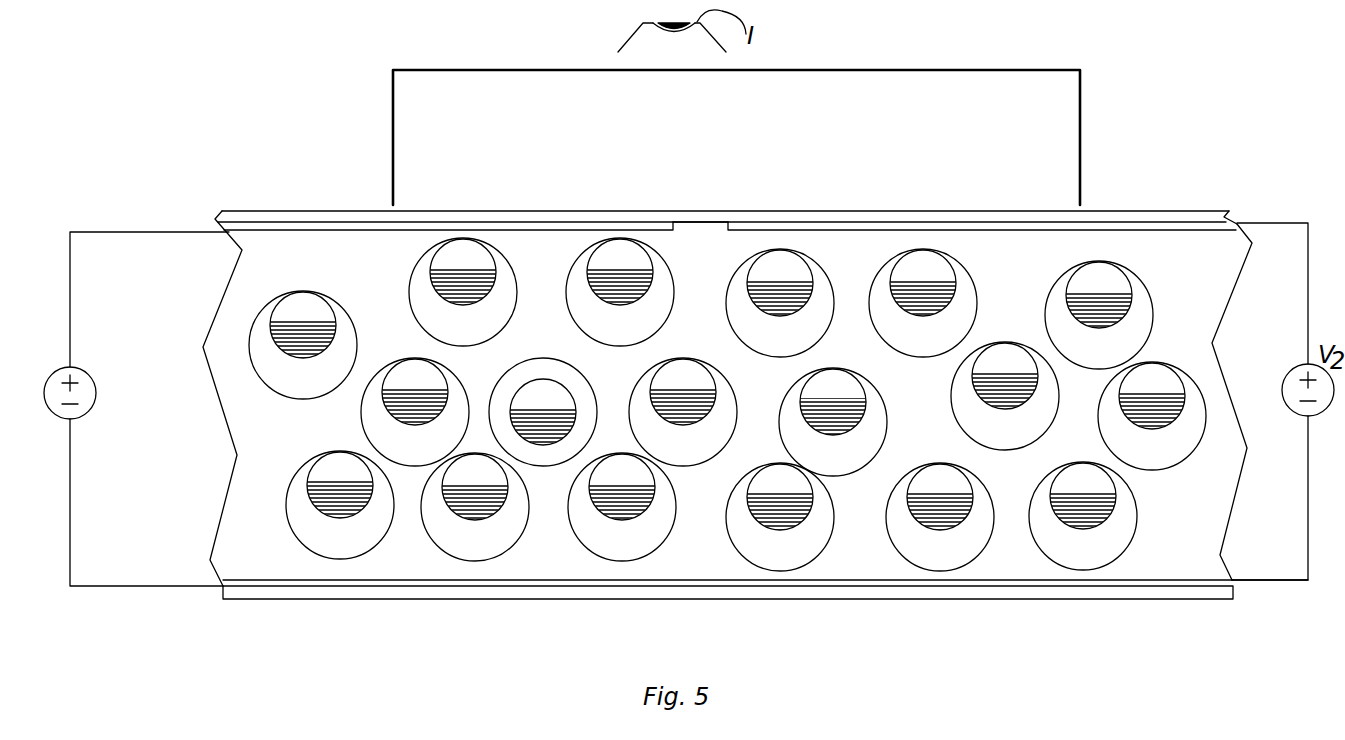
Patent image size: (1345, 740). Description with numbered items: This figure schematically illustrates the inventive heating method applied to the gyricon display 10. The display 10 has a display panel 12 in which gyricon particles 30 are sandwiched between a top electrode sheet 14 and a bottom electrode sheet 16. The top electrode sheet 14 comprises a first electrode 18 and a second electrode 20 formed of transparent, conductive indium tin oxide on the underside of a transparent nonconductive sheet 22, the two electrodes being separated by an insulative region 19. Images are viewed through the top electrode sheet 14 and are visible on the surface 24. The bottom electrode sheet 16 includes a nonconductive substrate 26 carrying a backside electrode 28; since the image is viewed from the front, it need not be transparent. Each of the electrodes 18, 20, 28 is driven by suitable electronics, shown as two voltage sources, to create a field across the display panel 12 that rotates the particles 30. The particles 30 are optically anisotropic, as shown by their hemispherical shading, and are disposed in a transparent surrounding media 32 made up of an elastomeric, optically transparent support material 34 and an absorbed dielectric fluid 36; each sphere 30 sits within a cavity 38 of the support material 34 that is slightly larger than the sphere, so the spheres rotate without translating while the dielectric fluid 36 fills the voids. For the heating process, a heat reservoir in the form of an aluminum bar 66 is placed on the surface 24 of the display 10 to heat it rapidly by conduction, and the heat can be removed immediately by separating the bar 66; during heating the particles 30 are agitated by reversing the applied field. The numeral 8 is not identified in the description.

The voltage source V1 8 is at (58, 364).
The gyricon display 10 is at (334, 138).
The display panel 12 is at (220, 440).
The top electrode sheet 14 is at (1262, 222).
The bottom electrode sheet 16 is at (1250, 577).
The first electrode 18 is at (386, 211).
The insulative region 19 is at (700, 228).
The second electrode 20 is at (1090, 222).
The transparent nonconductive sheet 22 is at (1205, 214).
The surface 24 is at (519, 210).
The nonconductive substrate 26 is at (1218, 590).
The backside electrode 28 is at (1180, 578).
The gyricon particles 30 is at (920, 263).
The surrounding media 32 is at (1207, 316).
The transparent support material 34 is at (1212, 248).
The dielectric fluid 36 is at (1187, 458).
The cavity 38 is at (1065, 337).
The aluminum bar 66 is at (1074, 132).